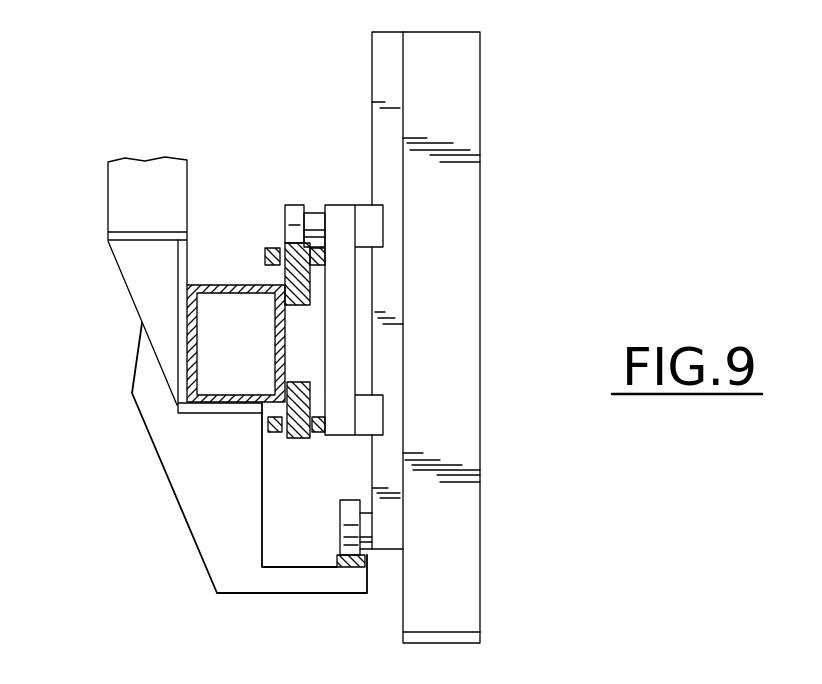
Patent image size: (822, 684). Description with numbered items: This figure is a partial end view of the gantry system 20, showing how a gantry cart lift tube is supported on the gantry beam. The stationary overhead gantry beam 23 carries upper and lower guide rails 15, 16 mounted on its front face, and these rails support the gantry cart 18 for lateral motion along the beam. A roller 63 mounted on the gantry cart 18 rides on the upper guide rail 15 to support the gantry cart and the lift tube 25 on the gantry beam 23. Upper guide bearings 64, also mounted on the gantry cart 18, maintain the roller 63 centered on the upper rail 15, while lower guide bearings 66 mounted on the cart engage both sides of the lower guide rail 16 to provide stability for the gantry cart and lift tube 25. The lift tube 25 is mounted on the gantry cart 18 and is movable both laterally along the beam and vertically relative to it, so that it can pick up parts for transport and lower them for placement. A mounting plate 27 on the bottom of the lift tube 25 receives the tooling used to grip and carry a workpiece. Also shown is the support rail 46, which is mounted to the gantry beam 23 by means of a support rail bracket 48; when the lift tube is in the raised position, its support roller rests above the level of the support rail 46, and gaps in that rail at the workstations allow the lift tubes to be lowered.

The gantry system 20 is at (625, 162).
The lift tube 25 is at (479, 113).
The mounting plate 27 is at (453, 636).
The gantry cart 18 is at (350, 268).
The roller 63 is at (295, 205).
The upper guide rail 15 is at (286, 276).
The upper guide bearings 64 is at (270, 247).
The lower guide rail 16 is at (313, 392).
The lower guide bearings 66 is at (275, 435).
The gantry beam 23 is at (187, 305).
The support rail bracket 48 is at (213, 549).
The support rail 46 is at (348, 560).